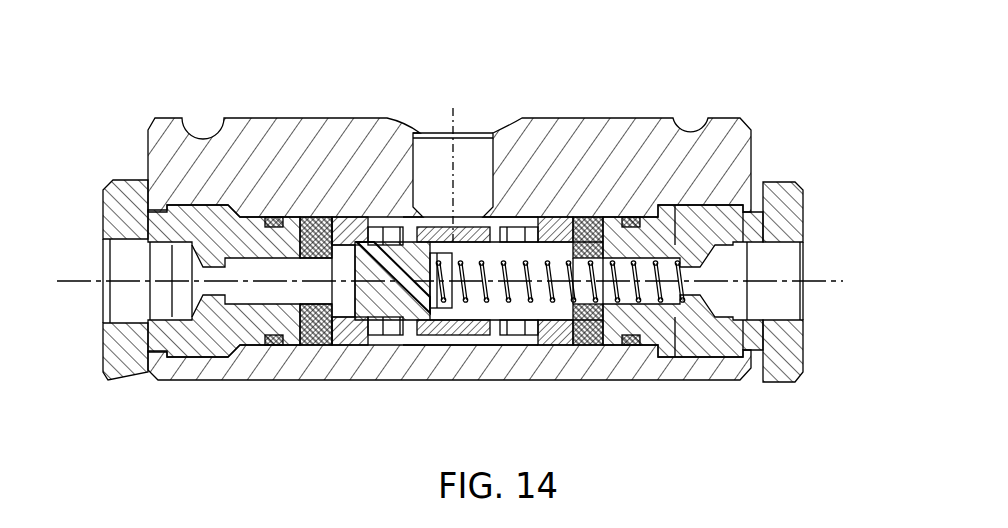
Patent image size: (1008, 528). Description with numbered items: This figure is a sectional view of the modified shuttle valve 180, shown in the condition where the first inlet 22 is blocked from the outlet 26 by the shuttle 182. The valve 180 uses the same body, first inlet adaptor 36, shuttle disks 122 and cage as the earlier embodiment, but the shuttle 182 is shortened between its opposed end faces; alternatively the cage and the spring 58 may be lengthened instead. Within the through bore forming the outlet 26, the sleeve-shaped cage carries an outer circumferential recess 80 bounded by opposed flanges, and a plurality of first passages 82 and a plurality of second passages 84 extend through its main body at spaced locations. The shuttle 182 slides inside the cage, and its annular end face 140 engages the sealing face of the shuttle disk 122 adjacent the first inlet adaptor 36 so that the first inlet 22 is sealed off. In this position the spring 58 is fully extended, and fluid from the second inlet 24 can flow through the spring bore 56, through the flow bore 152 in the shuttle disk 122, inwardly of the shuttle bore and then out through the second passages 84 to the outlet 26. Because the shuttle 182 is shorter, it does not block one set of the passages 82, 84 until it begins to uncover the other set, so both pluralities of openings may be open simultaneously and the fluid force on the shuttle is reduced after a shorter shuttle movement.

The valve 180 is at (293, 76).
The first inlet adaptor 36 is at (127, 360).
The outlet (through bore) 26 is at (486, 174).
The first inlet 22 is at (98, 252).
The second inlet 24 is at (808, 263).
The annular end face 140 is at (303, 346).
The shuttle disk 122 is at (577, 222).
The outer circumferential recess 80 is at (393, 328).
The shuttle 182 is at (420, 306).
The first passages 82 is at (390, 236).
The second passages 84 is at (515, 232).
The flow bore 152 is at (568, 347).
The spring bore 56 is at (646, 262).
The spring 58 is at (653, 325).